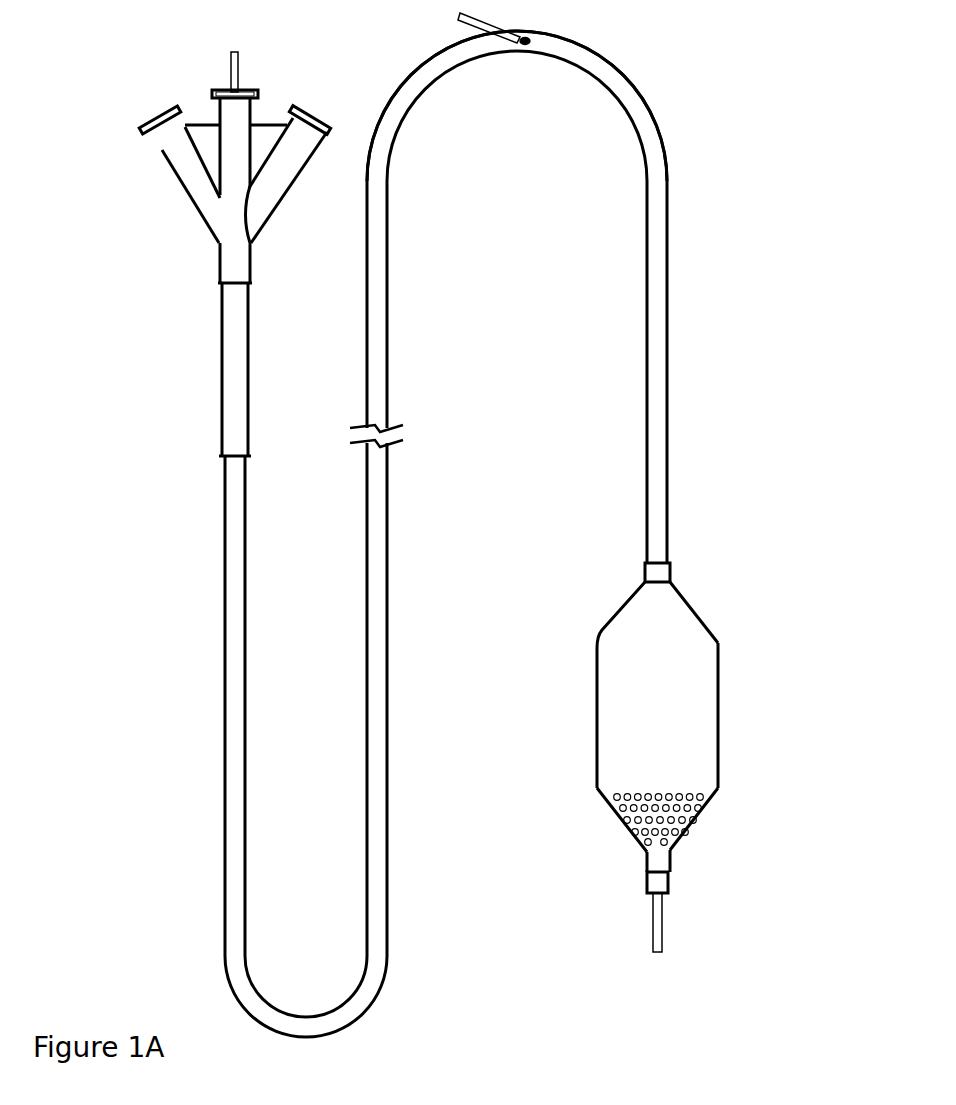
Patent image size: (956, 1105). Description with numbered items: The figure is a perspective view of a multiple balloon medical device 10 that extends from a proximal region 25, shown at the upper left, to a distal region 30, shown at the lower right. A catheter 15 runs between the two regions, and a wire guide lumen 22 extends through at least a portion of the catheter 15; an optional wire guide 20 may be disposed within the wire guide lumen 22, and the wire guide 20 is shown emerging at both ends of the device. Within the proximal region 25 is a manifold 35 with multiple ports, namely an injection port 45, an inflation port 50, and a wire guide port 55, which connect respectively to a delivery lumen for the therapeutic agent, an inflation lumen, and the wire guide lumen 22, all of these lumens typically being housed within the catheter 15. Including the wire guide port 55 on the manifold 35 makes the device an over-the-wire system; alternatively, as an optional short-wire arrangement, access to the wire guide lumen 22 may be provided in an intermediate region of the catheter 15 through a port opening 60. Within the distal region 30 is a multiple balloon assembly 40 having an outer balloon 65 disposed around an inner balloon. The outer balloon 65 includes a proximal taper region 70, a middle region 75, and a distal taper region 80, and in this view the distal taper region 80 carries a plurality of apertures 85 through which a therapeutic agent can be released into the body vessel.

The multiple balloon medical device 10 is at (755, 186).
The catheter 15 is at (237, 480).
The wire guide 20 is at (230, 75).
The wire guide lumen 22 is at (663, 880).
The proximal region 25 is at (68, 98).
The distal region 30 is at (798, 487).
The manifold 35 is at (188, 274).
The multiple balloon assembly 40 is at (712, 582).
The injection port 45 is at (198, 187).
The inflation port 50 is at (288, 157).
The wire guide port 55 is at (232, 145).
The port opening 60 is at (523, 44).
The outer balloon 65 is at (526, 580).
The proximal taper region 70 is at (643, 608).
The middle region 75 is at (663, 713).
The distal taper region 80 is at (619, 815).
The apertures 85 is at (641, 839).